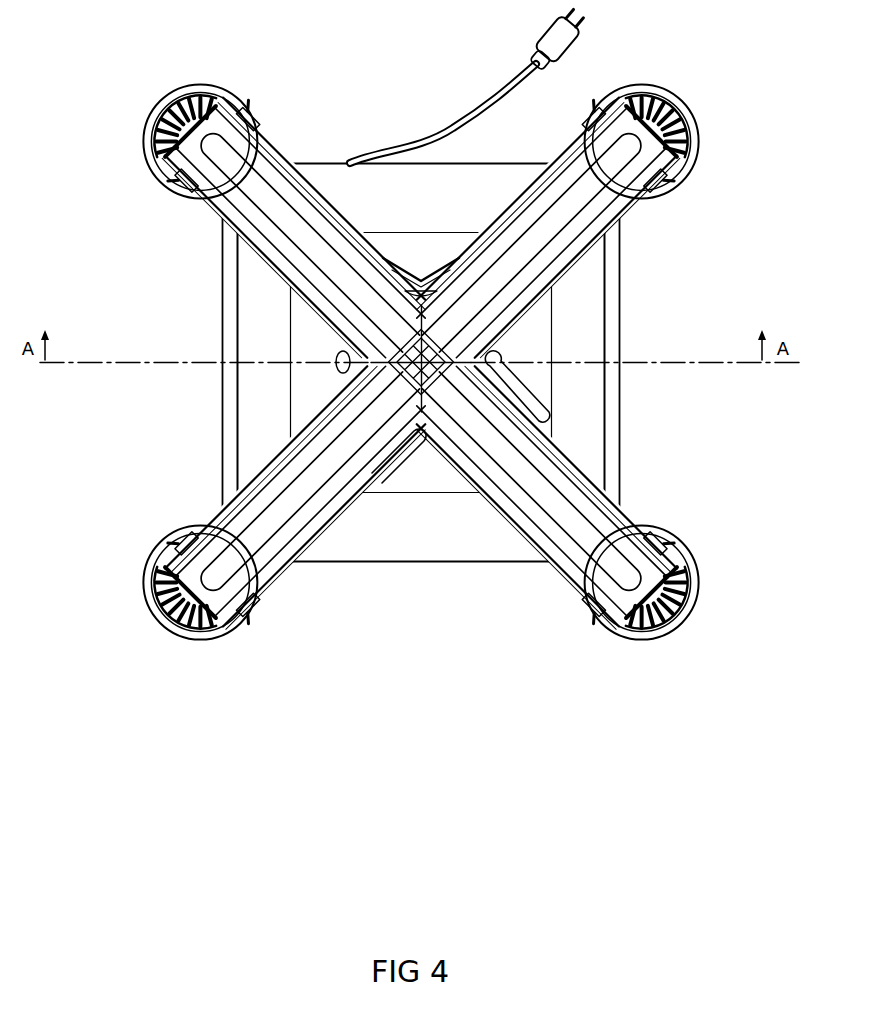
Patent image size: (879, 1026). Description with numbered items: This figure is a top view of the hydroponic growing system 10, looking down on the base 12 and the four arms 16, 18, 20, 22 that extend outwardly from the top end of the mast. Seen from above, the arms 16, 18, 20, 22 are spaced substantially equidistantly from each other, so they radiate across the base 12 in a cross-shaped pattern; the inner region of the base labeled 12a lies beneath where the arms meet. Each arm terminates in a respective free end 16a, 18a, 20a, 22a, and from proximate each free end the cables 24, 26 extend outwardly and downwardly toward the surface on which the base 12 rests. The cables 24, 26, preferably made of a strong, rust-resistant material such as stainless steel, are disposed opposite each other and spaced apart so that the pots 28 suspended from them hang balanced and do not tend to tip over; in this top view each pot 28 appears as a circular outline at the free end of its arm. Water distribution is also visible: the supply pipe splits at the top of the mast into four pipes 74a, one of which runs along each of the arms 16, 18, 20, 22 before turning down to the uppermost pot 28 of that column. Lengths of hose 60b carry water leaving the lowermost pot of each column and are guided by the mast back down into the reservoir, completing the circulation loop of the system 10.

The hydroponic growing system 10 is at (789, 140).
The base 12 is at (580, 335).
The base panel 12a is at (300, 398).
The arm 16 is at (571, 538).
The free end 16a is at (681, 579).
The arm 18 is at (287, 523).
The free end 18a is at (188, 622).
The arm 20 is at (288, 212).
The free end 20a is at (186, 104).
The arm 22 is at (593, 158).
The free end 22a is at (674, 112).
The cable 24 is at (172, 178).
The cable 26 is at (233, 96).
The pot 28 is at (143, 133).
The length of hose 60b is at (458, 265).
The pipe 74a is at (350, 290).